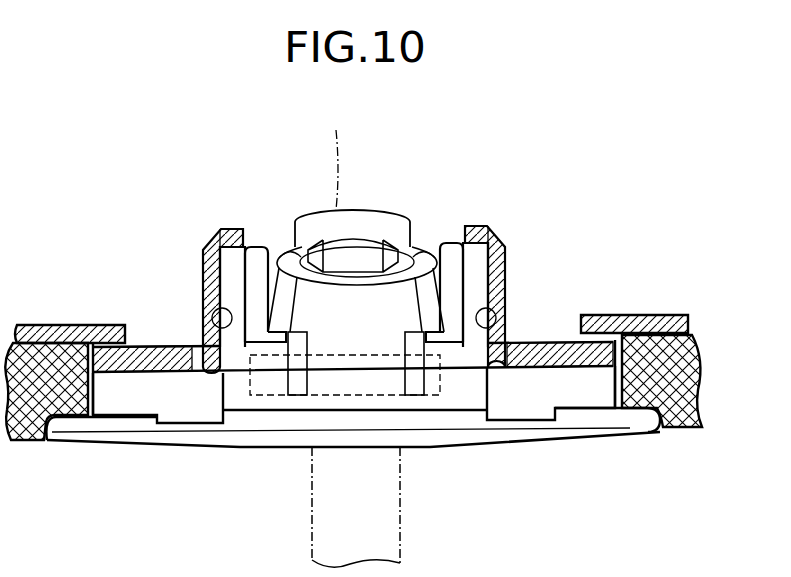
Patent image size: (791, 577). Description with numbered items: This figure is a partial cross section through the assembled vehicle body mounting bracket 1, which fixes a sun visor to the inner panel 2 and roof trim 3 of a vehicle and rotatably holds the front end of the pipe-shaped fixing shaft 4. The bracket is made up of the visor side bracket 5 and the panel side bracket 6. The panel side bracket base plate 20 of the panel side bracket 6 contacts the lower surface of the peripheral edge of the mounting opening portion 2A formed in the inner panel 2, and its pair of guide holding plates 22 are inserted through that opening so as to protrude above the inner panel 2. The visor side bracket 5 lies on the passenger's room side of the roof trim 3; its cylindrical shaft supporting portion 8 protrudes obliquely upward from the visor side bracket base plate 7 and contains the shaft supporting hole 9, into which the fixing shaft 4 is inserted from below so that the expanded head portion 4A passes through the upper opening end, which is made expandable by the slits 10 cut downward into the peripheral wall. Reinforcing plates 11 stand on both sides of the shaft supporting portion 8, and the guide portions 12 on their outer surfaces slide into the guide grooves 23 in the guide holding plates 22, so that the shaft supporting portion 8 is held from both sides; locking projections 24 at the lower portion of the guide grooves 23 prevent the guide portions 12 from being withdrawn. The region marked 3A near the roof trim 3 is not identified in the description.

The vehicle body mounting bracket 1 is at (598, 265).
The inner panel 2 is at (665, 316).
The mounting opening portion 2A is at (135, 330).
The roof trim 3 is at (694, 383).
The lower wall of body 3A is at (598, 395).
The fixing shaft 4 is at (312, 525).
The expanded head portion 4A is at (355, 152).
The visor side bracket 5 is at (440, 452).
The panel side bracket 6 is at (148, 337).
The visor side bracket base plate 7 is at (121, 422).
The shaft supporting portion 8 is at (432, 237).
The shaft supporting hole 9 is at (350, 255).
The slits 10 is at (372, 245).
The reinforcing plates 11 is at (255, 262).
The guide portion 12 is at (218, 262).
The panel side bracket base plate 20 is at (548, 345).
The guide holding plates 22 is at (203, 240).
The guide grooves 23 is at (213, 320).
The locking projection 24 is at (233, 368).